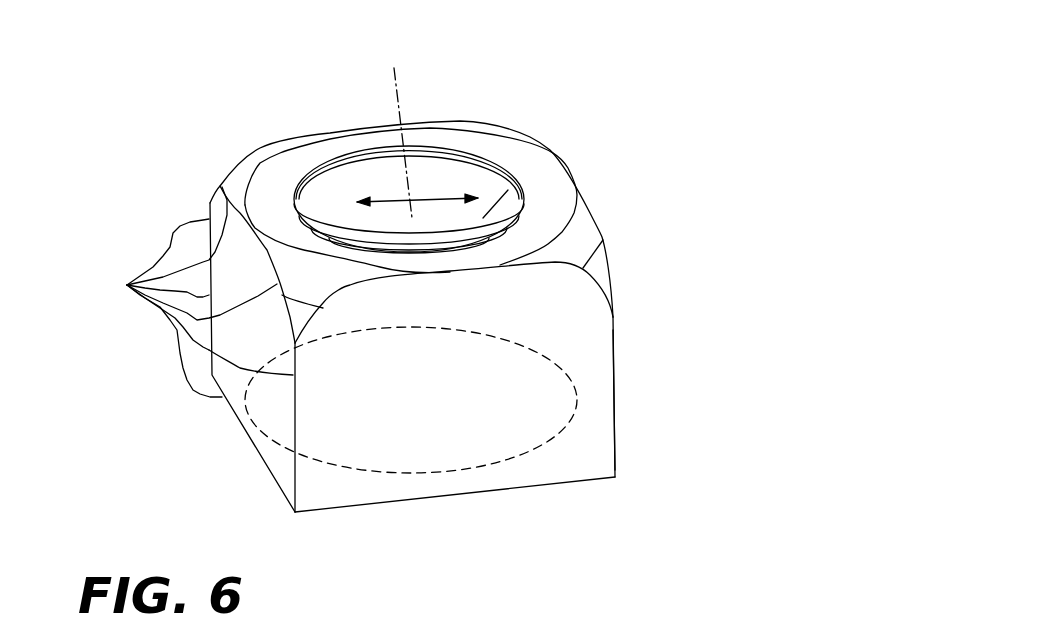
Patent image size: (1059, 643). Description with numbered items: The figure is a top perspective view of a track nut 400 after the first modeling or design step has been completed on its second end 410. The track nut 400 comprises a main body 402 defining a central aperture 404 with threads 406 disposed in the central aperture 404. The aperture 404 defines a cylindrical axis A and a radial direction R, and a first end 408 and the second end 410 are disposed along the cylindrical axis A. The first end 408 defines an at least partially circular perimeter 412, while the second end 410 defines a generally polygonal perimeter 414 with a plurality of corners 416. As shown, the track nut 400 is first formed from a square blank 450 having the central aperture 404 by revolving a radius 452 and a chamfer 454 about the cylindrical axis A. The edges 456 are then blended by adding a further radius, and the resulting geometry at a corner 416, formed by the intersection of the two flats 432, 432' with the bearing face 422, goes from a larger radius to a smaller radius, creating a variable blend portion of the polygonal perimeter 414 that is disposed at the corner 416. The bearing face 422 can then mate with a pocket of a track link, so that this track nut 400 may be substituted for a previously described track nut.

The track nut 400 is at (414, 290).
The main body 402 is at (414, 290).
The square blank 450 is at (523, 109).
The central aperture 404 is at (483, 181).
The threads 406 is at (512, 202).
The first end 408 is at (450, 497).
The second end 410 is at (411, 160).
The bearing face 422 is at (287, 158).
The at least partially circular perimeter 412 is at (566, 374).
The polygonal perimeter 414 is at (560, 161).
The corner 416 is at (583, 232).
The flat 432 is at (307, 389).
The flat 432' is at (660, 406).
The radius 452 is at (320, 285).
The chamfer 454 is at (303, 318).
The edges 456 is at (127, 285).
The cylindrical axis A is at (399, 89).
The radial direction R is at (450, 200).